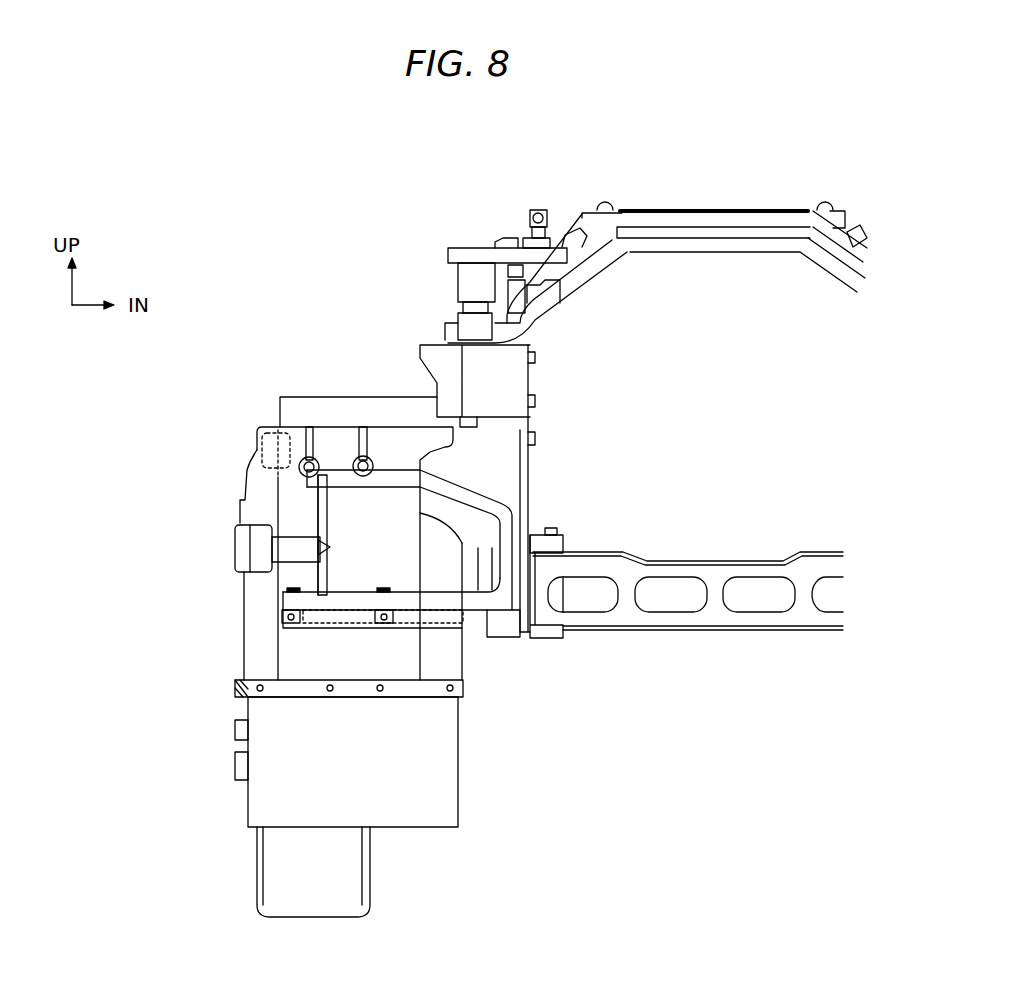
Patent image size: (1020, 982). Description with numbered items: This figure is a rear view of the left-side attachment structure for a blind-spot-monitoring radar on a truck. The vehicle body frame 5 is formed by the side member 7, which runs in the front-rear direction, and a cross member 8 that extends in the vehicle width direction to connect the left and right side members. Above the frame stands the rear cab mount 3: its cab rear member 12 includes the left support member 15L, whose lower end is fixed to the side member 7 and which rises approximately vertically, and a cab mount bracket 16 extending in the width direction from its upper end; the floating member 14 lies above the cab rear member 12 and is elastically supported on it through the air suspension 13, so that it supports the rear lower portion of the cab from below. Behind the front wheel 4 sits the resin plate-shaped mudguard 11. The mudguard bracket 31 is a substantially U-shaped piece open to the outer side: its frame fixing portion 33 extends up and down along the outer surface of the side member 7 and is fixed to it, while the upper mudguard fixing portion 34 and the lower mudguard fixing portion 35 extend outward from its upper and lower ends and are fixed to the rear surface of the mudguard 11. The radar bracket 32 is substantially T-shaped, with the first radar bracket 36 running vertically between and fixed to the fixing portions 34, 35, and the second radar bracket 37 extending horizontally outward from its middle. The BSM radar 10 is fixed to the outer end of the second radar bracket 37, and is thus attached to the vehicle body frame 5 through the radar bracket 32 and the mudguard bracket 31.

The rear cab mount 3 is at (757, 201).
The front wheel 4 is at (257, 885).
The vehicle body frame 5 is at (697, 554).
The side member 7 is at (553, 638).
The cross member 8 is at (742, 560).
The BSM radar 10 is at (233, 552).
The mudguard 11 is at (243, 612).
The cab rear member 12 is at (640, 255).
The air suspension 13 is at (458, 278).
The floating member 14 is at (718, 208).
The left support member 15L is at (535, 380).
The cab mount bracket 16 is at (705, 255).
The mudguard bracket 31 is at (478, 610).
The radar bracket 32 is at (318, 506).
The frame fixing portion 33 is at (516, 520).
The upper mudguard fixing portion 34 is at (397, 470).
The lower mudguard fixing portion 35 is at (355, 588).
The first radar bracket 36 is at (327, 527).
The second radar bracket 37 is at (300, 525).